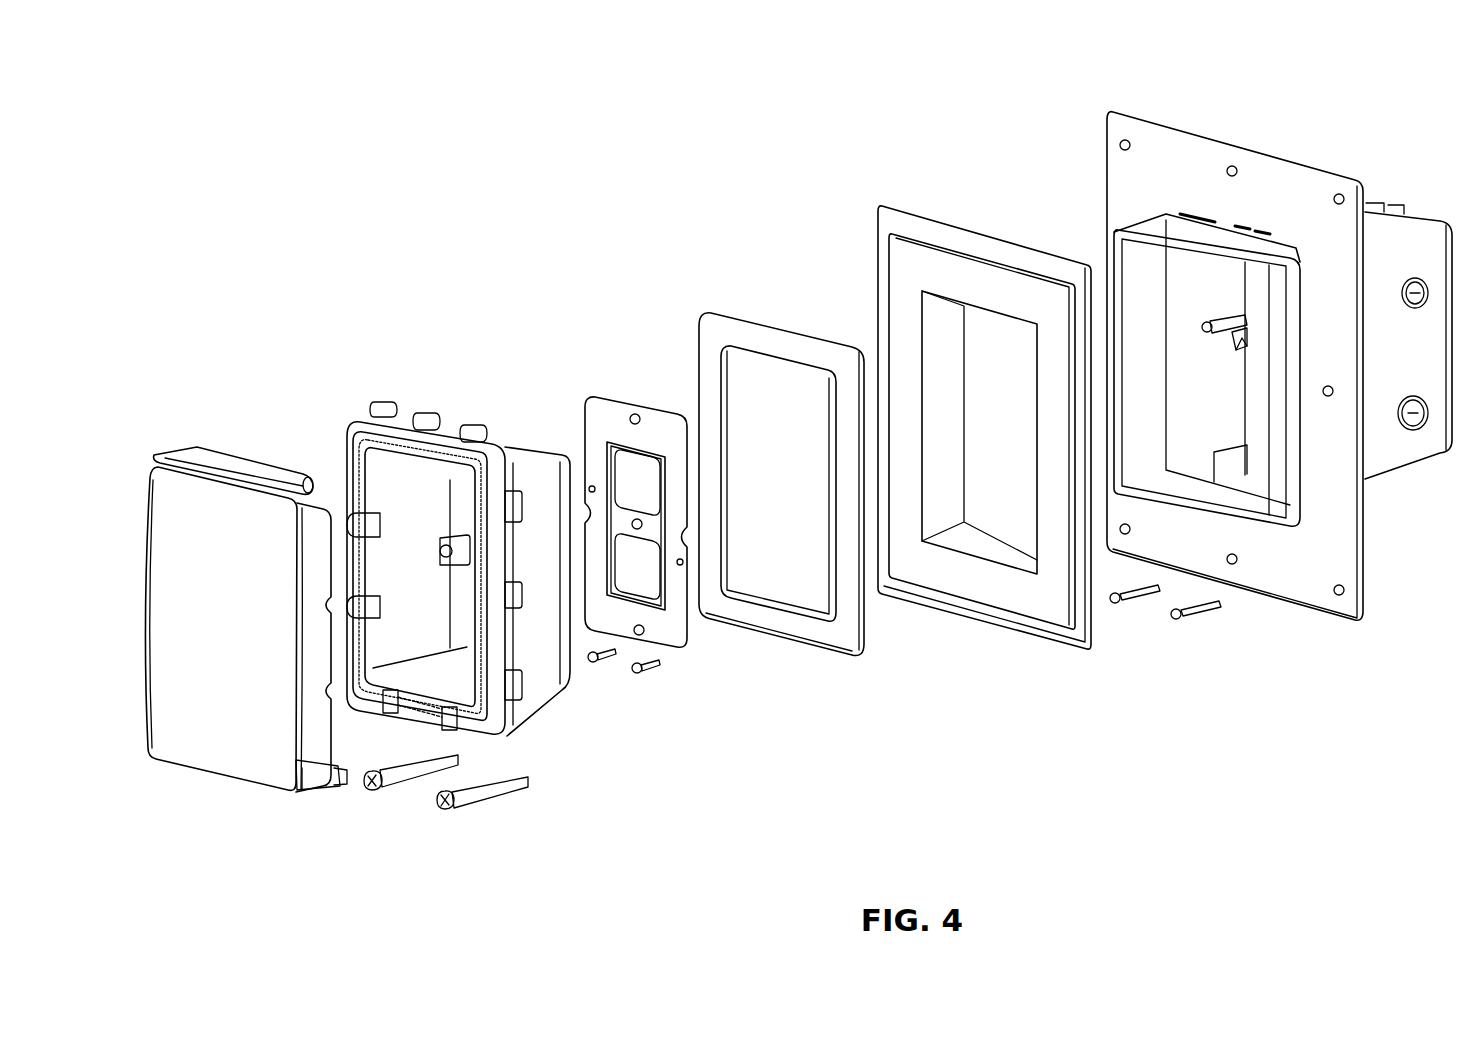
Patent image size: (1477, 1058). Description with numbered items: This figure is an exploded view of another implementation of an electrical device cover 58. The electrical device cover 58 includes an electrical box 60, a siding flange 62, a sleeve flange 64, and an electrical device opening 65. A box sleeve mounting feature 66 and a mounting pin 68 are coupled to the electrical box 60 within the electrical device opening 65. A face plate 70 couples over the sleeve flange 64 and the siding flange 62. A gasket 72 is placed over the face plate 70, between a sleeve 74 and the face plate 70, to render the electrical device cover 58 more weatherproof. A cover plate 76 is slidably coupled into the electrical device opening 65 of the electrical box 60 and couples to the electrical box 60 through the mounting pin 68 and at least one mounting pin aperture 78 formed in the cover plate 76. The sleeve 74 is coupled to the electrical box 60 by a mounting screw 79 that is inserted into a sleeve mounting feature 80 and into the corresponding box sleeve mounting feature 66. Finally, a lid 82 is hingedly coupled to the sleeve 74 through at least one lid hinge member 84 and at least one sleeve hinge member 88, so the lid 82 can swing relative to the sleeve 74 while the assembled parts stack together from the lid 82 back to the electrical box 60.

The electrical device cover 58 is at (670, 212).
The electrical box 60 is at (1380, 444).
The siding flange 62 is at (1324, 559).
The sleeve flange 64 is at (1167, 346).
The electrical device opening 65 is at (1188, 401).
The box sleeve mounting feature 66 is at (1245, 328).
The mounting pin 68 is at (1210, 320).
The face plate 70 is at (1035, 585).
The gasket 72 is at (810, 630).
The sleeve 74 is at (543, 660).
The cover plate 76 is at (662, 633).
The mounting pin aperture 78 is at (590, 486).
The mounting screw 79 is at (489, 789).
The sleeve mounting feature 80 is at (440, 543).
The lid 82 is at (229, 719).
The lid hinge member 84 is at (242, 455).
The sleeve hinge member 88 is at (387, 400).